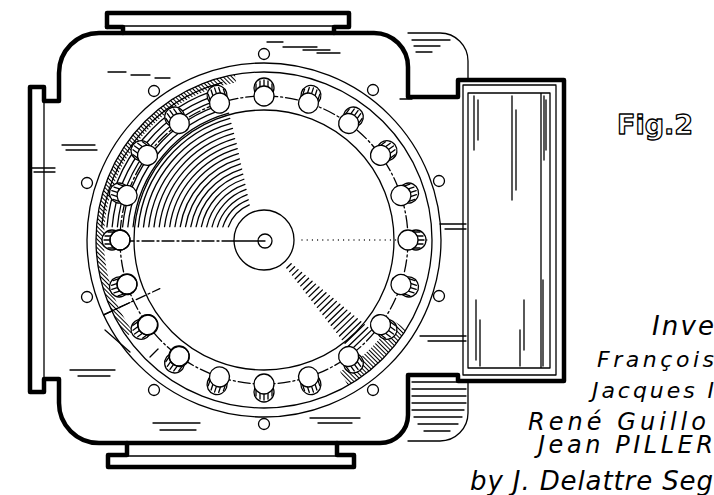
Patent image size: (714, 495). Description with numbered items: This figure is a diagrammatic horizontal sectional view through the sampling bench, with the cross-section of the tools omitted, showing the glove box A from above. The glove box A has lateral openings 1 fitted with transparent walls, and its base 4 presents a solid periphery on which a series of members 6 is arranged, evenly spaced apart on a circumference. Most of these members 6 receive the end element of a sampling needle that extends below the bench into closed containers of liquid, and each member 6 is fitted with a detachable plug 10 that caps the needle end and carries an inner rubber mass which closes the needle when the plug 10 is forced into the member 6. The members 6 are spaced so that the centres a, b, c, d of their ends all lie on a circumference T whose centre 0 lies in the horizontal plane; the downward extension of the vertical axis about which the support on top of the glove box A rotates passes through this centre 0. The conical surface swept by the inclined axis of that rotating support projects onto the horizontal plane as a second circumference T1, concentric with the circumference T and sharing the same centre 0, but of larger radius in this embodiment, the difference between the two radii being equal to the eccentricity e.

The glove box A is at (445, 56).
The lateral openings 1 is at (440, 98).
The centre 0 is at (264, 240).
The base 4 is at (264, 240).
The members 6 is at (262, 396).
The detachable plug 10 is at (345, 350).
The centre of member end a is at (125, 244).
The centre of member end b is at (133, 284).
The centre of member end c is at (151, 324).
The centre of member end d is at (181, 353).
The eccentricity e is at (121, 315).
The circumference T is at (150, 357).
The circumference T1 is at (122, 318).